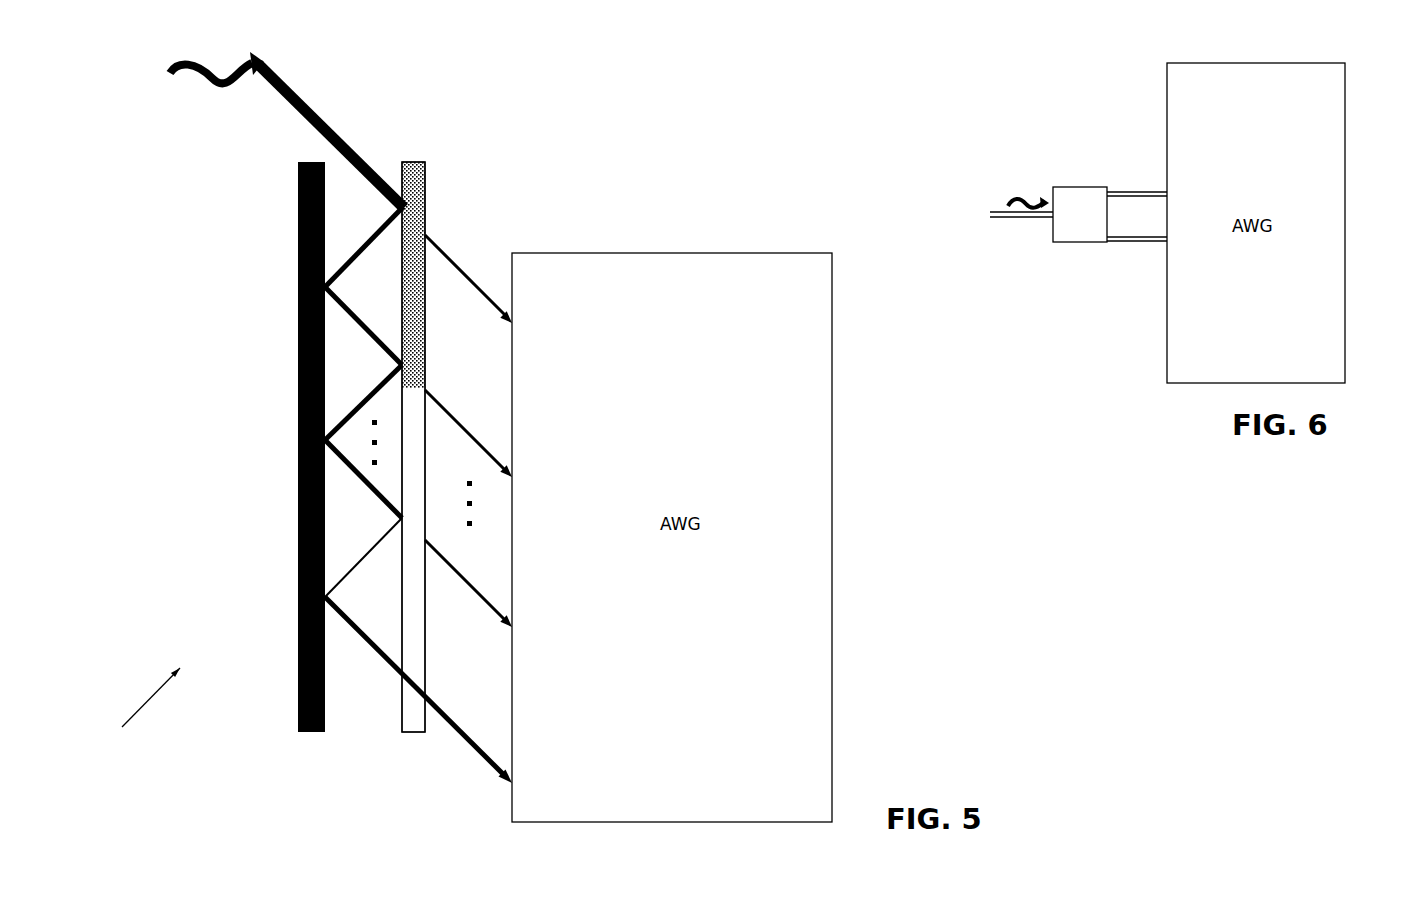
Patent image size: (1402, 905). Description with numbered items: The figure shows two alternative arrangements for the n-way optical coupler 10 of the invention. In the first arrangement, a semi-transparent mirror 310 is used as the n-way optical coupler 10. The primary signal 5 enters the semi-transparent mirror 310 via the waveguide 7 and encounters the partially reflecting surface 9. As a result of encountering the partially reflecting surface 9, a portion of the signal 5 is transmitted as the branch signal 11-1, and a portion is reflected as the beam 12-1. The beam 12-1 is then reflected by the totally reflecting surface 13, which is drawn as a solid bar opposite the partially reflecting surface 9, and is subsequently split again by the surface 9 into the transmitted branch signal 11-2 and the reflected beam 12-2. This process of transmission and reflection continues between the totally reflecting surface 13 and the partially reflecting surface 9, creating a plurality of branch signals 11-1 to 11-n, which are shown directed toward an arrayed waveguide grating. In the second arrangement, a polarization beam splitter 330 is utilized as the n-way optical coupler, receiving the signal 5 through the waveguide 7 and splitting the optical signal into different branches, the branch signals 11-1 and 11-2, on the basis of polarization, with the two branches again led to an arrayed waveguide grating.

In FIG. 5, the primary signal 5 is at (217, 88).
In FIG. 6, the primary signal 5 is at (1028, 193).
In FIG. 5, the waveguide 7 is at (331, 136).
In FIG. 6, the waveguide 7 is at (1010, 219).
In FIG. 5, the partially reflecting surface 9 is at (403, 628).
In FIG. 5, the n-way optical coupler 10 is at (136, 712).
In FIG. 5, the totally reflecting surface 13 is at (310, 735).
In FIG. 5, the semi-transparent mirror 310 is at (415, 735).
In FIG. 5, the reflected beam 12-1 is at (364, 286).
In FIG. 5, the reflected beam 12-2 is at (363, 441).
In FIG. 5, the branch signal 11-1 is at (465, 266).
In FIG. 6, the branch signal 11-1 is at (1152, 177).
In FIG. 5, the branch signal 11-2 is at (465, 413).
In FIG. 6, the branch signal 11-2 is at (1152, 250).
In FIG. 5, the branch signal 11-n is at (465, 723).
In FIG. 6, the polarization beam splitter 330 is at (1070, 243).